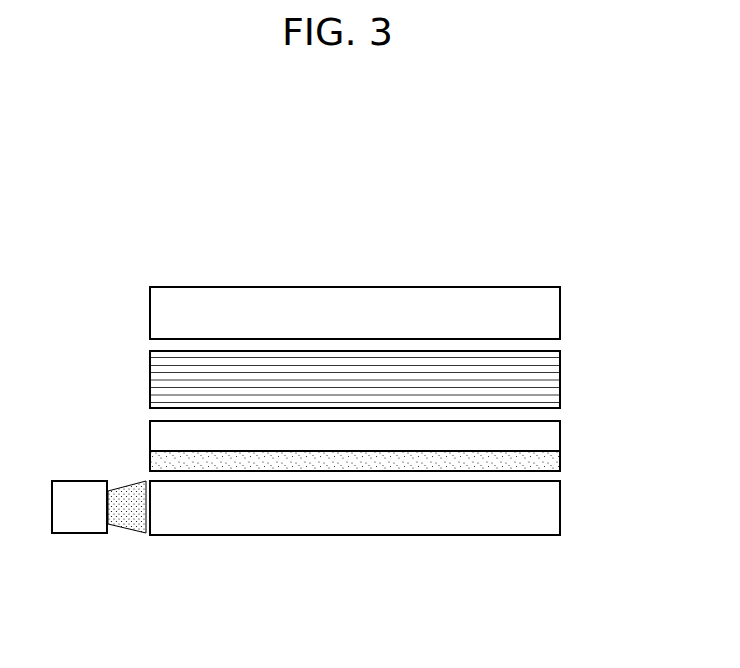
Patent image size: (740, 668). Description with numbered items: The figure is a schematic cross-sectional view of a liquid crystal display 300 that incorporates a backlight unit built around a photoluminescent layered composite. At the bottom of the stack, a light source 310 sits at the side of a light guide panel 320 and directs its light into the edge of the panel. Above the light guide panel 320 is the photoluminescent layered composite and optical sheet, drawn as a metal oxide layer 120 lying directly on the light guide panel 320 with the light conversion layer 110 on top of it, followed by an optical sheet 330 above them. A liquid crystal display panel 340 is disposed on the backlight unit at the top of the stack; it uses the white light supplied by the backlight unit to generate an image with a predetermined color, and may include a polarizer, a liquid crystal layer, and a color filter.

The liquid crystal display 300 is at (149, 257).
The liquid crystal display panel 340 is at (560, 311).
The optical sheet 330 is at (560, 380).
The light conversion layer 110 is at (560, 431).
The metal oxide layer 120 is at (560, 458).
The light guide panel 320 is at (560, 507).
The light source 310 is at (80, 534).